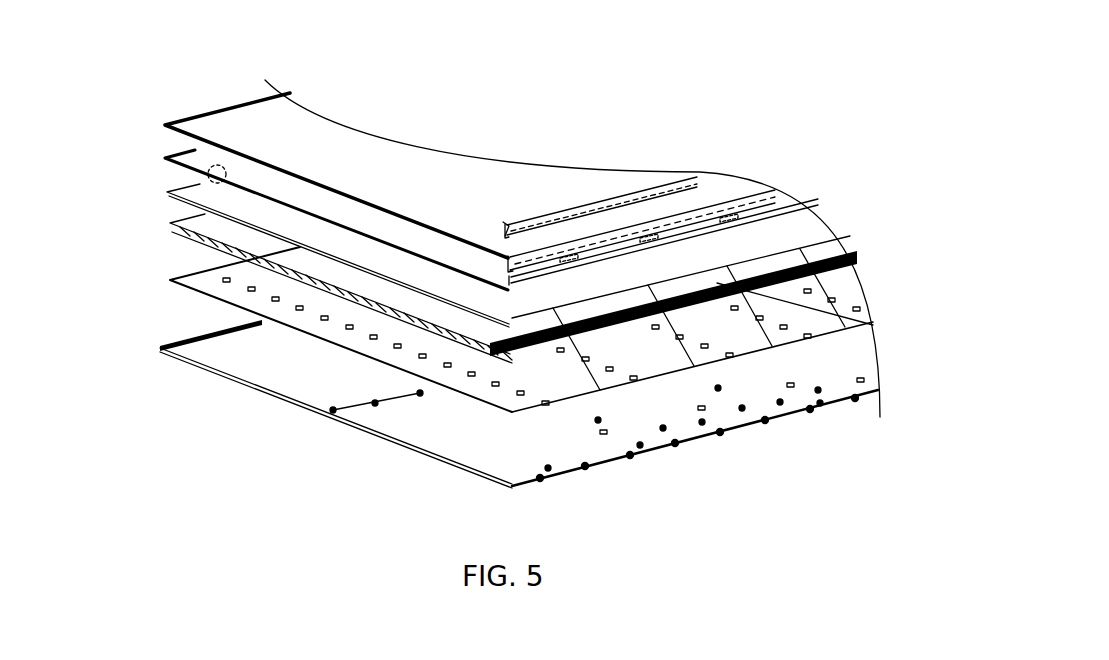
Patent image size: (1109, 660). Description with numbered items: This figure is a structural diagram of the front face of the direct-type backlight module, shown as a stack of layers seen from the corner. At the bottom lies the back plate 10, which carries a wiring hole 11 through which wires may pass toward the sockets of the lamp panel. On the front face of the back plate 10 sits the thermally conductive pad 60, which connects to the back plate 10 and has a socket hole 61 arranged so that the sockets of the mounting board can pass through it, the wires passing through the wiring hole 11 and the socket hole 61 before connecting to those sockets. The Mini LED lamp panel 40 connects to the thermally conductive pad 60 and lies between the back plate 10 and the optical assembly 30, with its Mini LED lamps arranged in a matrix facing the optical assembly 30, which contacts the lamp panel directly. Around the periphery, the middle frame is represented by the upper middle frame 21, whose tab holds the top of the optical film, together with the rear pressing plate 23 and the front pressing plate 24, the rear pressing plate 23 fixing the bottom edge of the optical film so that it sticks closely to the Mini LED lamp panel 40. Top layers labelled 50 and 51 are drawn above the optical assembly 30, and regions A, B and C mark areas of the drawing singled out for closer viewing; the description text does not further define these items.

The back plate 10 is at (285, 382).
The wiring hole 11 is at (790, 384).
The upper middle frame 21 is at (177, 347).
The rear pressing plate 23 is at (518, 278).
The front pressing plate 24 is at (508, 222).
The optical assembly 30 is at (168, 192).
The Mini LED lamp panel 40 is at (172, 225).
The top cover plate 50 is at (165, 125).
The cover plate lower layer 51 is at (165, 158).
The thermally conductive pad 60 is at (200, 290).
The socket hole 61 is at (762, 312).
The detail region A is at (212, 329).
The detail region B is at (221, 170).
The detail region C is at (724, 278).